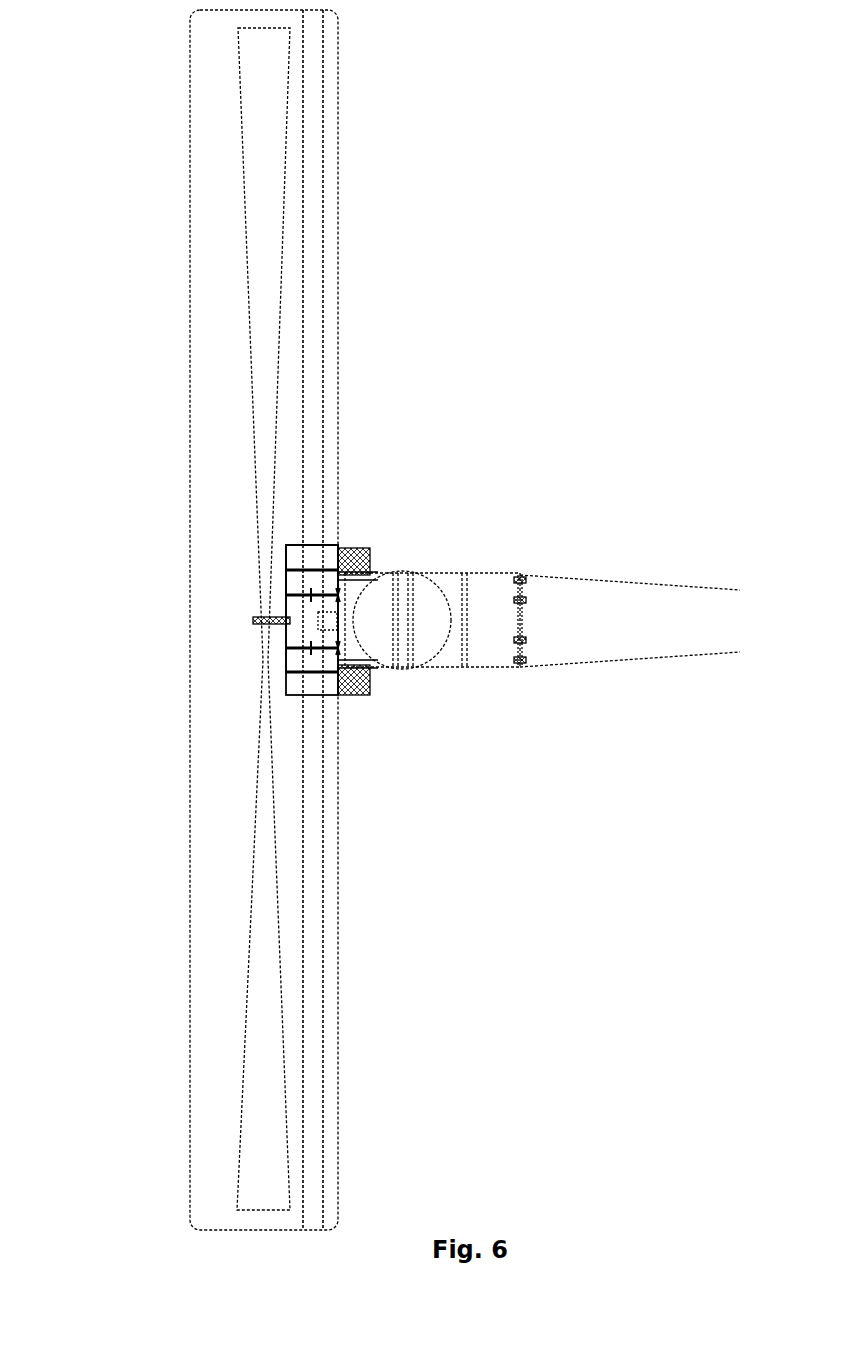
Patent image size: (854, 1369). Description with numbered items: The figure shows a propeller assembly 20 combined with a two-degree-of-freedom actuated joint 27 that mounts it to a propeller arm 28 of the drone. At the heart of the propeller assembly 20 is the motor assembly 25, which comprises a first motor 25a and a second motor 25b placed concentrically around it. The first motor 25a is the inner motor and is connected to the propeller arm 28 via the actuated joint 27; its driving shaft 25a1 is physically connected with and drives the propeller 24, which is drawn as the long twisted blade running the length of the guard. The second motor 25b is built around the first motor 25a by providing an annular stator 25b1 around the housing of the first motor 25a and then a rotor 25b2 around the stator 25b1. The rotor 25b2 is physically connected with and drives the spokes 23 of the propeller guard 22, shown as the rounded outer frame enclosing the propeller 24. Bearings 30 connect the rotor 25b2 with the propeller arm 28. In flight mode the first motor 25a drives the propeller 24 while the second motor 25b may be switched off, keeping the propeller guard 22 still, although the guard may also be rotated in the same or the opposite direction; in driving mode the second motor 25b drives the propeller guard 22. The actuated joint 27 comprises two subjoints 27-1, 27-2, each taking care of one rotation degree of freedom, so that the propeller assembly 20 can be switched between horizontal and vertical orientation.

The propeller assembly 20 is at (175, 92).
The propeller guard 22 is at (207, 313).
The spokes 23 is at (315, 308).
The propeller 24 is at (256, 124).
The motor assembly 25 is at (355, 536).
The first motor 25a is at (293, 636).
The driving shaft 25a1 is at (295, 635).
The second motor 25b is at (122, 432).
The annular stator 25b1 is at (288, 580).
The rotor 25b2 is at (288, 553).
The actuated joint 27 is at (367, 525).
The first subjoint 27-1 is at (409, 622).
The second subjoint 27-2 is at (474, 617).
The propeller arm 28 is at (668, 613).
The bearings 30 is at (356, 688).